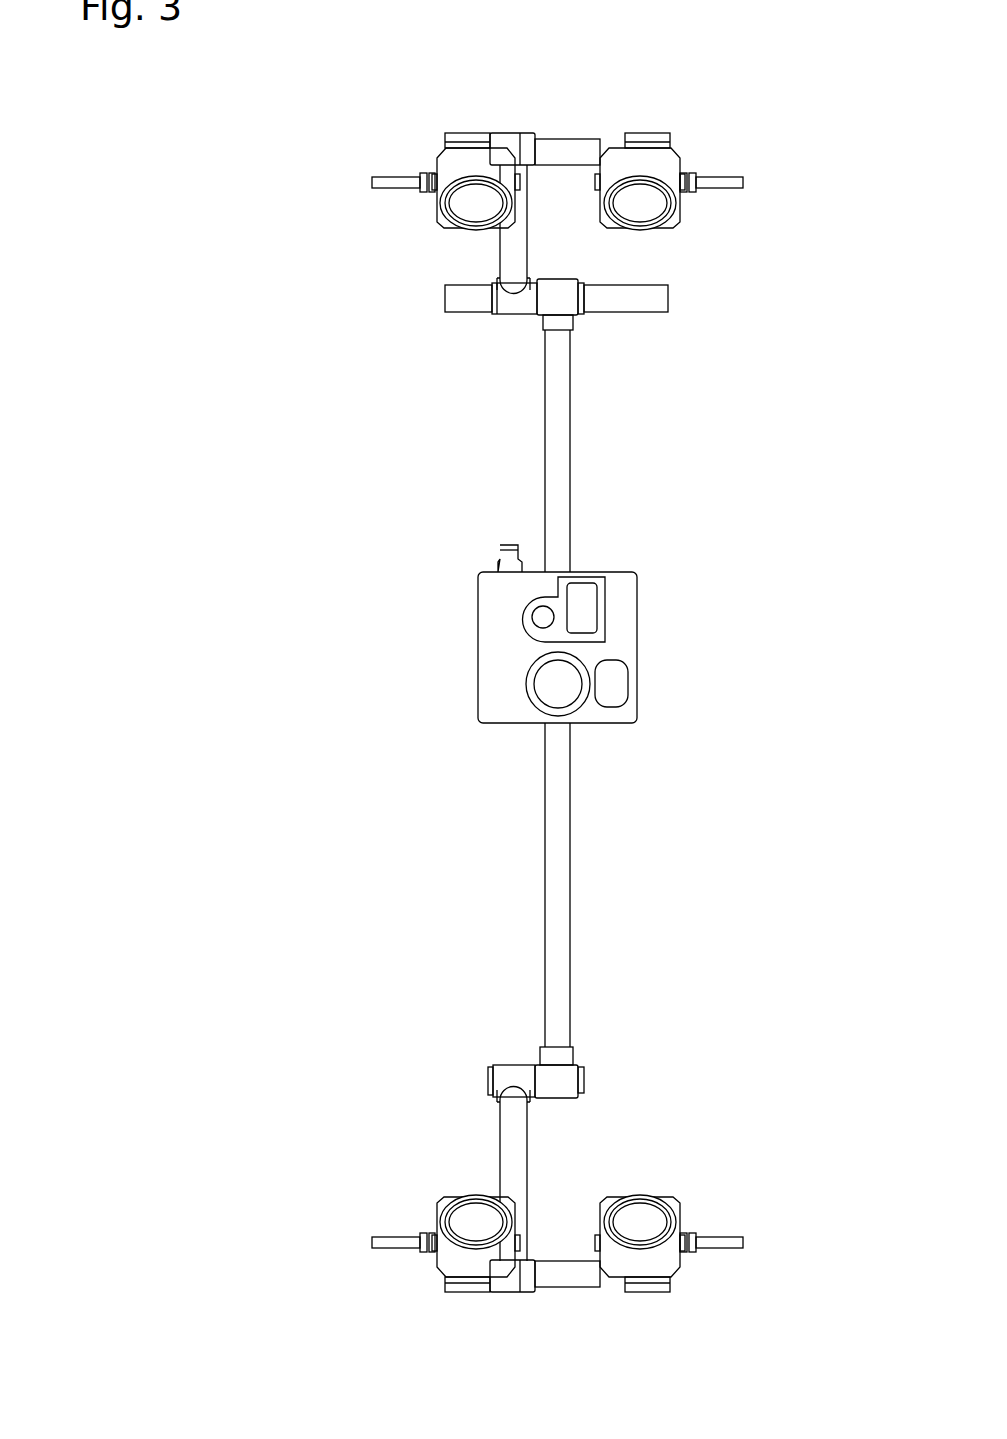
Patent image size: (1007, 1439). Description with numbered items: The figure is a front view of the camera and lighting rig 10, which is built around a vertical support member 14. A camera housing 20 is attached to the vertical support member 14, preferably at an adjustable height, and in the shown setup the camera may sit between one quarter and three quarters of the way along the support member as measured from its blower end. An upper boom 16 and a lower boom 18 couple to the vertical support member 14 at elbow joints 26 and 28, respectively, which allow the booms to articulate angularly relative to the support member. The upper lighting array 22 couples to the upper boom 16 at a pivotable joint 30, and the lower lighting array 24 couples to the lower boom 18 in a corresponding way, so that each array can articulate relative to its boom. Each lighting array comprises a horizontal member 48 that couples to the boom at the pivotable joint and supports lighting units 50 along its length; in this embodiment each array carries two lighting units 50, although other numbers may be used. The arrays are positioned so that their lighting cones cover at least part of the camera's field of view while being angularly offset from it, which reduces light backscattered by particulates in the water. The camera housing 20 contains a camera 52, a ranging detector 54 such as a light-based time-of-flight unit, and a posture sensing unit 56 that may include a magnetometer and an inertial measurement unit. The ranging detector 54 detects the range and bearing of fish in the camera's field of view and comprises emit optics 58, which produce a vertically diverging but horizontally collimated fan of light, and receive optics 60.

The camera and lighting rig 10 is at (288, 463).
The vertical support member 14 is at (556, 848).
The upper boom 16 is at (505, 250).
The lower boom 18 is at (517, 1146).
The camera housing 20 is at (419, 642).
The upper lighting array 22 is at (343, 176).
The lower lighting array 24 is at (343, 1263).
The elbow joint 26 is at (512, 305).
The elbow joint 28 is at (517, 1070).
The pivotable joint 30 is at (517, 148).
The horizontal member 48 is at (583, 150).
The lighting unit 50 is at (650, 207).
The camera 52 is at (558, 684).
The ranging detector 54 is at (618, 608).
The posture sensing unit 56 is at (618, 683).
The emit optics 58 is at (583, 602).
The receive optics 60 is at (536, 614).